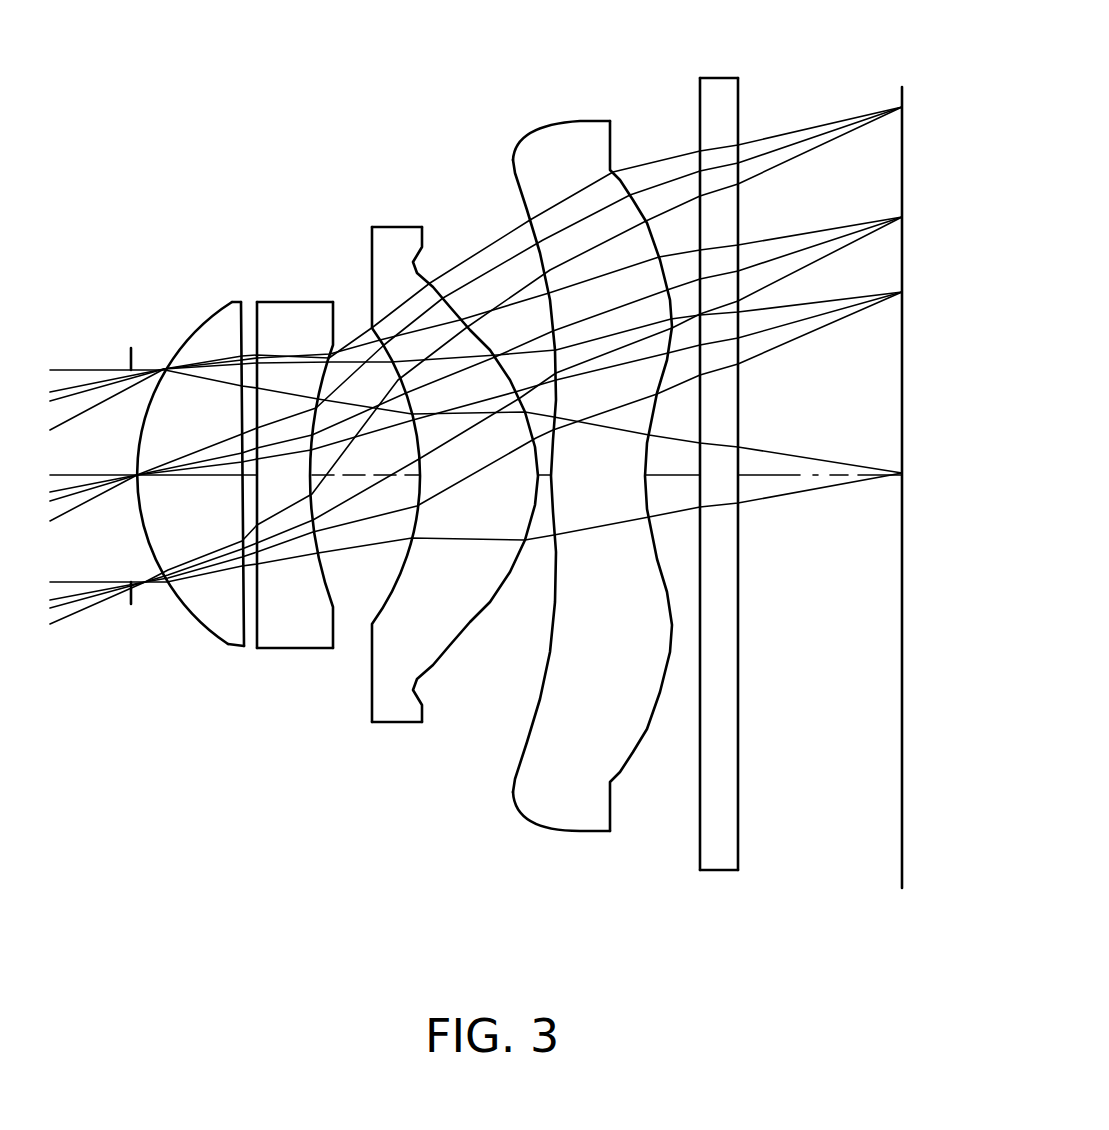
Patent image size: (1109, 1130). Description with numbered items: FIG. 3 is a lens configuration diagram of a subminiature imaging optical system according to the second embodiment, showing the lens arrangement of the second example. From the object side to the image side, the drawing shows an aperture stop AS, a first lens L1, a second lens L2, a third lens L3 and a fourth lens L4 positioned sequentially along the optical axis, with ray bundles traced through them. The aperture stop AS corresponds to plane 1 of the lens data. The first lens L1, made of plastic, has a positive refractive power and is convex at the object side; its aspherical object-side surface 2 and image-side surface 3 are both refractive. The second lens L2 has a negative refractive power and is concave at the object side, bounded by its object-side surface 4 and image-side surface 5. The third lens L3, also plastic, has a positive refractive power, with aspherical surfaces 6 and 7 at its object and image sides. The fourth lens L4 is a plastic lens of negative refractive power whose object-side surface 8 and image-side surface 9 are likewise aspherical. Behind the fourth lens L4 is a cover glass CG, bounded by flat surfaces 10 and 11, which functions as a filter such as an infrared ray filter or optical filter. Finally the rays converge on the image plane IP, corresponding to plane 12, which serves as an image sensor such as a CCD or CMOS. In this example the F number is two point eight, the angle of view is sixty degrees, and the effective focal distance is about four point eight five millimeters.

The aperture stop plane 1 is at (131, 348).
The object-side surface of first lens 2 is at (182, 342).
The image-side surface of first lens 3 is at (244, 330).
The object-side surface of second lens 4 is at (258, 300).
The image-side surface of second lens 5 is at (334, 300).
The object-side surface of third lens 6 is at (372, 227).
The image-side surface of third lens 7 is at (423, 232).
The object-side surface of fourth lens 8 is at (513, 160).
The image-side surface of fourth lens 9 is at (612, 128).
The object-side surface of cover glass 10 is at (700, 80).
The image-side surface of cover glass 11 is at (738, 80).
The image plane surface 12 is at (905, 90).
The aperture stop AS is at (130, 604).
The first lens L1 is at (218, 650).
The second lens L2 is at (290, 652).
The third lens L3 is at (395, 722).
The fourth lens L4 is at (530, 803).
The cover glass CG is at (700, 848).
The image plane IP is at (900, 853).